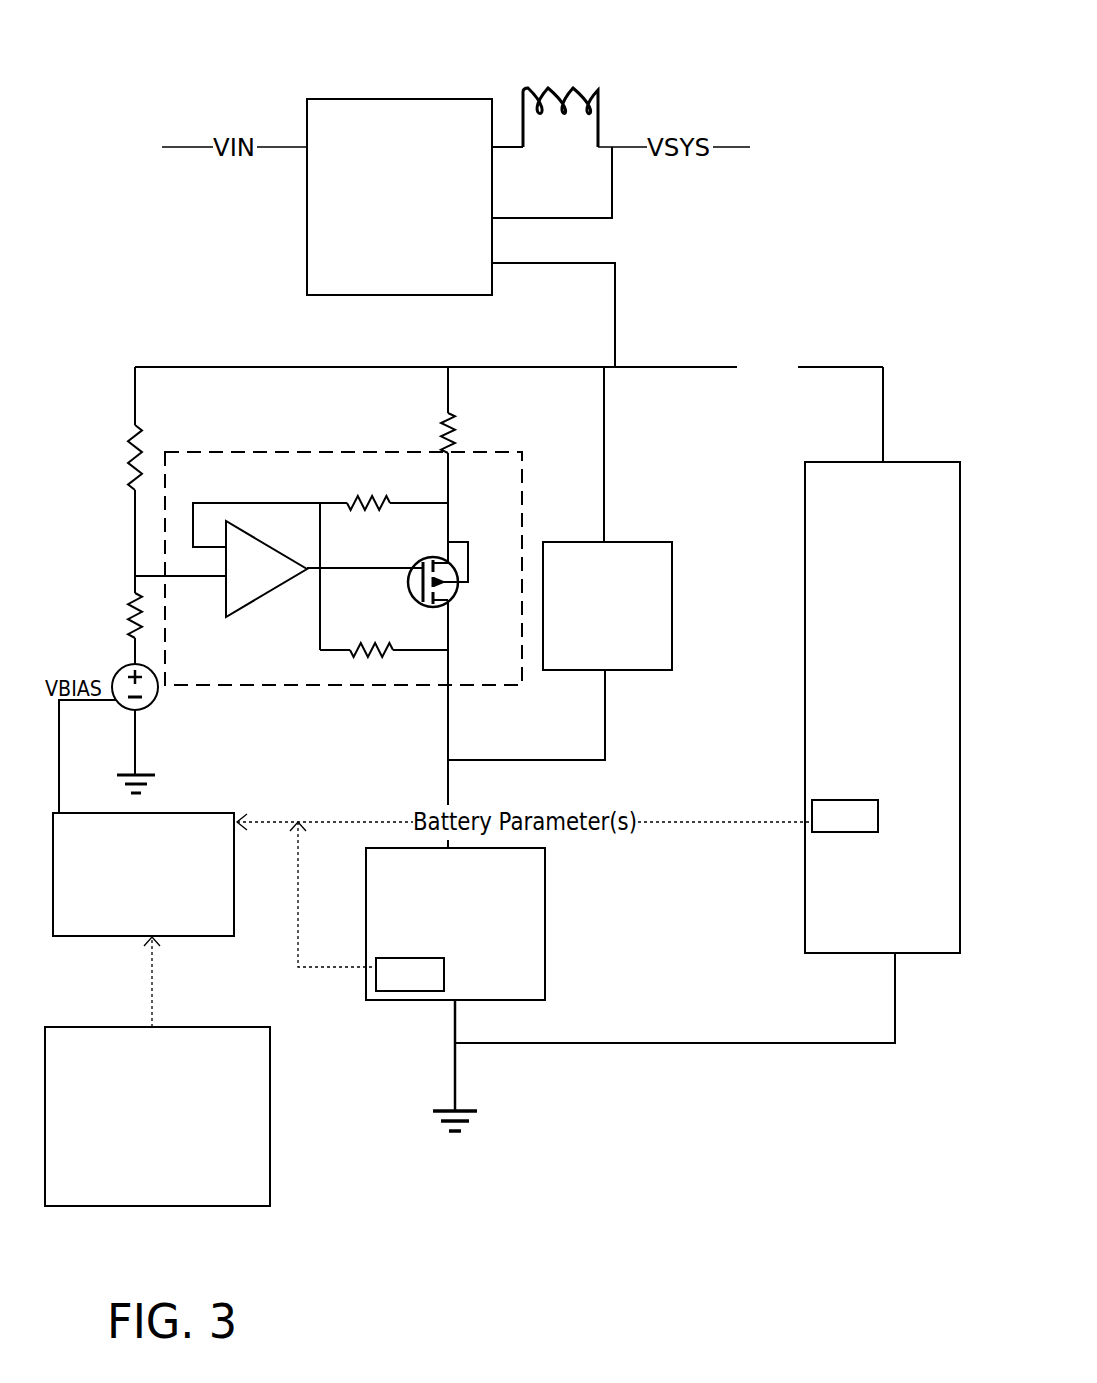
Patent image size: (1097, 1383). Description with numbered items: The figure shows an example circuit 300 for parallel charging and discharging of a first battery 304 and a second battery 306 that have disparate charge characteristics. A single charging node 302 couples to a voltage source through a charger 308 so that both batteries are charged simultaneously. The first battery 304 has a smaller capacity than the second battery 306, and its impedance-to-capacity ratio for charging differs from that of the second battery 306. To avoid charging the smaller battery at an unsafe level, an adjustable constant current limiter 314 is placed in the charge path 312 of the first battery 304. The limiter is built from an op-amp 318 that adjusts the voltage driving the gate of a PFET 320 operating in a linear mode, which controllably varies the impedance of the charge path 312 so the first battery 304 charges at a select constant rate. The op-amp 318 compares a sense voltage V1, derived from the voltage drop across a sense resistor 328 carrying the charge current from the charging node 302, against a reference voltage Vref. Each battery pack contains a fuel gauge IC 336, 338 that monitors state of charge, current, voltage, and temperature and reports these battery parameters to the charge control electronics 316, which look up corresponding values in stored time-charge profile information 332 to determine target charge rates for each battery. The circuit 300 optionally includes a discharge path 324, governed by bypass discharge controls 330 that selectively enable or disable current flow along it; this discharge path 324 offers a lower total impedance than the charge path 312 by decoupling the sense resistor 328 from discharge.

The example circuit 300 is at (706, 56).
The charging node 302 is at (616, 366).
The first battery 304 is at (455, 924).
The second battery 306 is at (882, 707).
The charger 308 is at (399, 197).
The charge path 312 is at (449, 495).
The adjustable constant current limiter 314 is at (288, 686).
The charge control electronics 316 is at (143, 874).
The op-amp 318 is at (261, 560).
The PFET 320 is at (409, 589).
The discharge path 324 is at (605, 513).
The sense resistor 328 is at (453, 412).
The bypass discharge controls 330 is at (607, 606).
The stored time-charge profile information 332 is at (157, 1116).
The fuel gauge IC 336 is at (410, 974).
The fuel gauge IC 338 is at (845, 816).